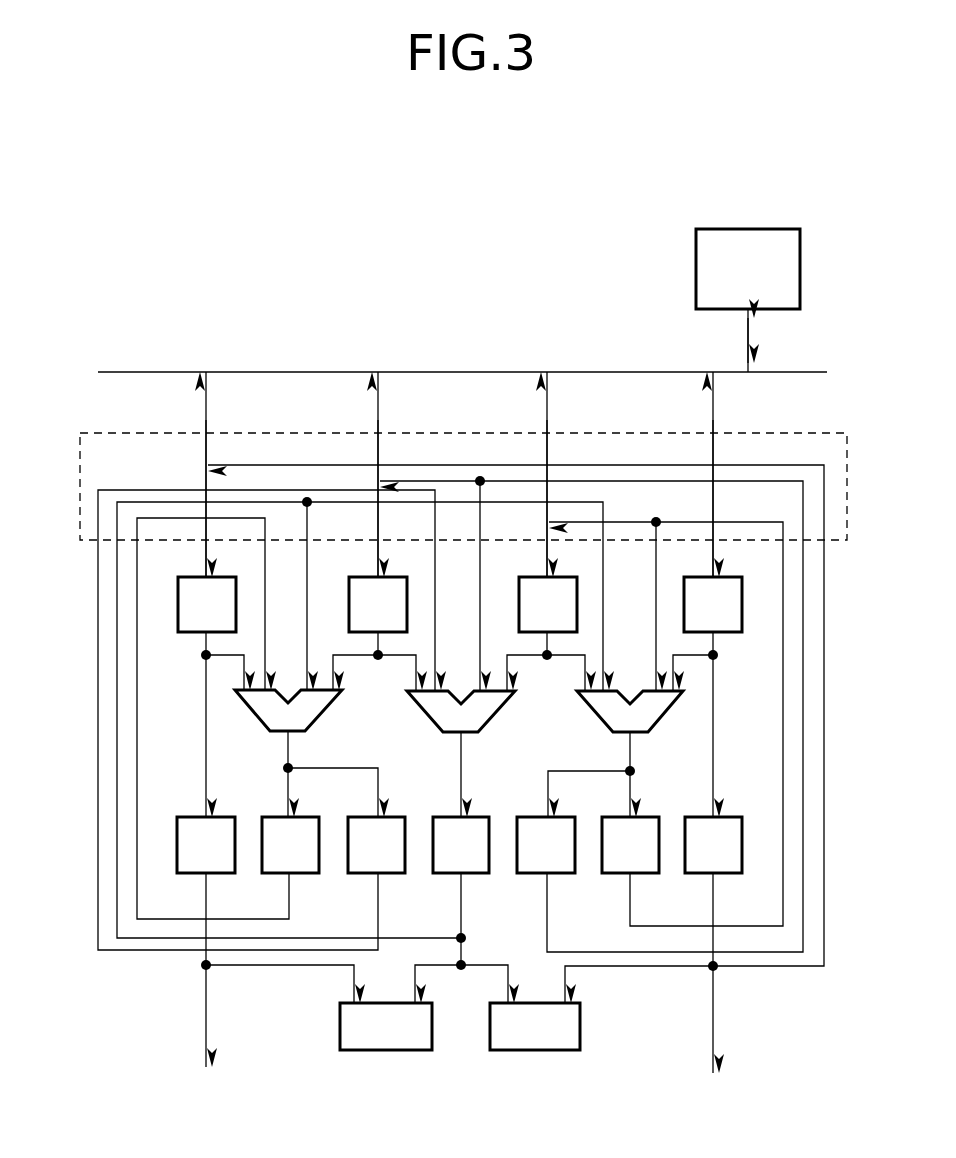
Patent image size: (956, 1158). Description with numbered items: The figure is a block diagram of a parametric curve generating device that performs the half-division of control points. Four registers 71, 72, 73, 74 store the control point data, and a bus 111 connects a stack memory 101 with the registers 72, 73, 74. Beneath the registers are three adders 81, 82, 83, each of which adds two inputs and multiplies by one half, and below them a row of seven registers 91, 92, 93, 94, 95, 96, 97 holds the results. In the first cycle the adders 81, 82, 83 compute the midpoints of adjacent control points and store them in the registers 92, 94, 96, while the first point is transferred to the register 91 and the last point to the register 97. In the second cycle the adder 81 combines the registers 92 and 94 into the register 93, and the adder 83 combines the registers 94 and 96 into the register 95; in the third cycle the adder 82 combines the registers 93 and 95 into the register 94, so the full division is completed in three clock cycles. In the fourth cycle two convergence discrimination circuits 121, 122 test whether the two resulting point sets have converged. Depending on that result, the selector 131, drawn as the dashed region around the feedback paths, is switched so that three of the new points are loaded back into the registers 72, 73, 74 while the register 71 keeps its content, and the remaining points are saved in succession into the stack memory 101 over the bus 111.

The register 71 is at (185, 632).
The register 72 is at (349, 600).
The register 73 is at (519, 600).
The register 74 is at (735, 632).
The adder 81 is at (323, 718).
The adder 82 is at (493, 720).
The adder 83 is at (663, 720).
The register 91 is at (187, 817).
The register 92 is at (300, 873).
The register 93 is at (385, 873).
The register 94 is at (470, 873).
The register 95 is at (556, 873).
The register 96 is at (640, 873).
The register 97 is at (735, 817).
The stack memory 101 is at (752, 229).
The bus 111 is at (243, 372).
The convergence discrimination circuit 121 is at (340, 1014).
The convergence discrimination circuit 122 is at (580, 1016).
The selector 131 is at (178, 433).